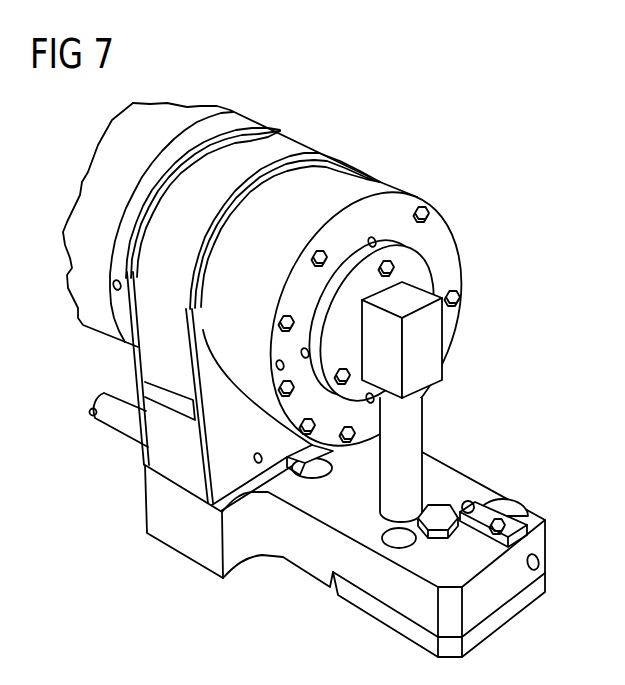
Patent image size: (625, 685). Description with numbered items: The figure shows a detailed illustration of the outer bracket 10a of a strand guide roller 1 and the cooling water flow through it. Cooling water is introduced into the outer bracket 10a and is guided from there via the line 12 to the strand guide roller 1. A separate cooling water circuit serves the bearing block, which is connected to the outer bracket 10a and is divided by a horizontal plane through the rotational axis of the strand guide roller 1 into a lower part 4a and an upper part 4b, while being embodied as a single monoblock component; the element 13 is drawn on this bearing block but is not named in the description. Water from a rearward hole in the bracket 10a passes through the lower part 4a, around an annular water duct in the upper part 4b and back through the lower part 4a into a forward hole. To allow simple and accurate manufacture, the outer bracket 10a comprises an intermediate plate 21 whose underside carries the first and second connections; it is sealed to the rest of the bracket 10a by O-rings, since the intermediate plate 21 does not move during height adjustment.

The strand guide roller 1 is at (80, 165).
The lower part of the bearing block 4a is at (177, 467).
The upper part of the bearing block 4b is at (297, 148).
The flange 13 is at (438, 257).
The line 12 is at (416, 409).
The outer bracket 10a is at (473, 490).
The intermediate plate 21 is at (512, 616).